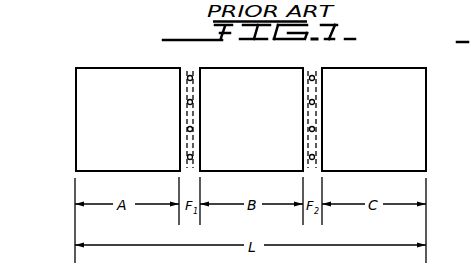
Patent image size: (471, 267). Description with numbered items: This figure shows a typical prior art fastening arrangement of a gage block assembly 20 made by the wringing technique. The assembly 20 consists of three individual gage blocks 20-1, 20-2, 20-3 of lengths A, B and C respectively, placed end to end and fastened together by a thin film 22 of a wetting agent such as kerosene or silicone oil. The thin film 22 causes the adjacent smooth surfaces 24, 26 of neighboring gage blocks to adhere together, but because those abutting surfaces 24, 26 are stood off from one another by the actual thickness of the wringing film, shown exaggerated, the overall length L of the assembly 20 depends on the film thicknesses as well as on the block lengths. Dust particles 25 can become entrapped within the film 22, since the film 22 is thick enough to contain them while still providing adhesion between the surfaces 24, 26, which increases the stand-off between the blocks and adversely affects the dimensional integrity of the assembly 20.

The gage block assembly 20 is at (133, 60).
The gage block 20-1 is at (97, 65).
The gage block 20-2 is at (274, 60).
The gage block 20-3 is at (389, 76).
The thin film 22 is at (261, 107).
The smooth surface 24 is at (183, 165).
The dust particles 25 is at (193, 103).
The smooth surface 26 is at (194, 167).